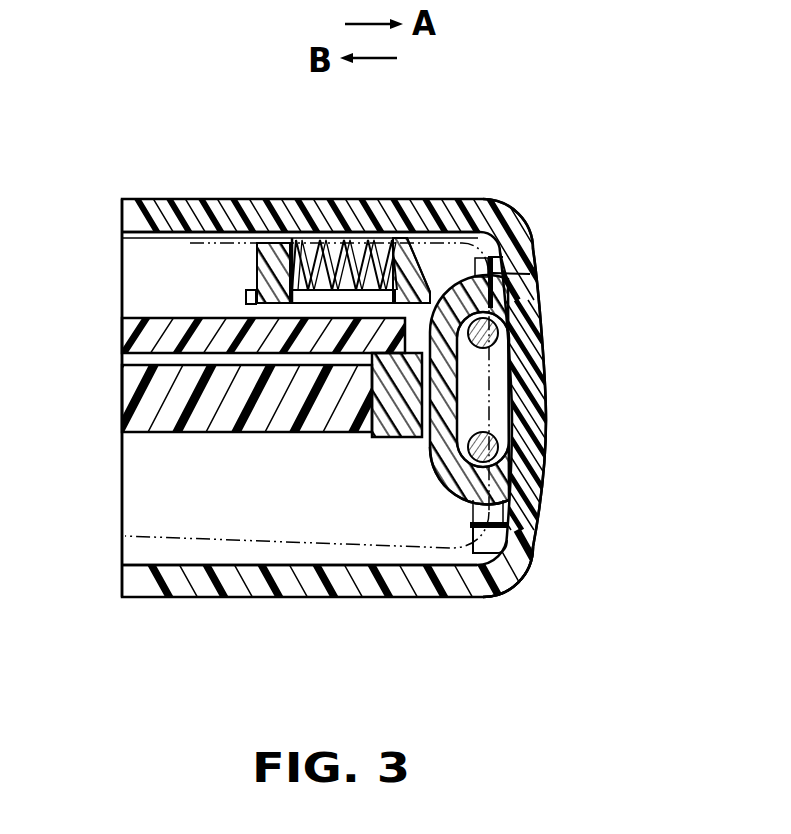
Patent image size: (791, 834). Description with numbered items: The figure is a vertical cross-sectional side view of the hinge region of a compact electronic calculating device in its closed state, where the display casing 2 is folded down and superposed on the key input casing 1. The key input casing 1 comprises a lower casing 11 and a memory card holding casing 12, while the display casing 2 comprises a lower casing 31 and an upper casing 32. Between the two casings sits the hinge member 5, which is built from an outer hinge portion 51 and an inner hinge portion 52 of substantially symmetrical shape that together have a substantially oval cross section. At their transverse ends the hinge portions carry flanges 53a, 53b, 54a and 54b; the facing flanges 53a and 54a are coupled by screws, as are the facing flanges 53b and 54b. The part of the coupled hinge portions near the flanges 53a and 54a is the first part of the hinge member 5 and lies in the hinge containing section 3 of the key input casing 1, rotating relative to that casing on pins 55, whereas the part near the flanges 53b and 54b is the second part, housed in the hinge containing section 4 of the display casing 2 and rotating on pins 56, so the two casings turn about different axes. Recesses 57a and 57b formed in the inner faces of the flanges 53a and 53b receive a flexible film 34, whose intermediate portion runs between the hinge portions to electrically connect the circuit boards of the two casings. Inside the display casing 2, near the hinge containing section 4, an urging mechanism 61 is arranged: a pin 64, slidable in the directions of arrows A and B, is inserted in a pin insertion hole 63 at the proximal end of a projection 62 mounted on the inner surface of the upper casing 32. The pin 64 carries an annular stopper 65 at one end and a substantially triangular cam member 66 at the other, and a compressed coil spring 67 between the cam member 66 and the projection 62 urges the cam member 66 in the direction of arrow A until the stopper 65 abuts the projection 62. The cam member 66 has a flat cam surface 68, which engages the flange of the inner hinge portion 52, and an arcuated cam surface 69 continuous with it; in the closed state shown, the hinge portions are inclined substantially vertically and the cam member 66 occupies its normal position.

The key input casing 1 is at (152, 605).
The display casing 2 is at (133, 190).
The hinge containing section 3 is at (523, 502).
The hinge containing section 4 is at (527, 292).
The hinge member 5 is at (556, 381).
The lower casing 11 is at (219, 597).
The memory card holding casing 12 is at (120, 405).
The lower casing 31 is at (198, 210).
The upper casing 32 is at (122, 330).
The flexible film 34 is at (303, 592).
The outer hinge portion 51 is at (410, 391).
The inner hinge portion 52 is at (432, 464).
The flange 53a is at (518, 553).
The flange 53b is at (505, 272).
The flange 54a is at (473, 560).
The flange 54b is at (490, 256).
The pins 55 is at (502, 450).
The pins 56 is at (503, 326).
The recess 57a is at (520, 572).
The recess 57b is at (503, 222).
The urging mechanism 61 is at (238, 268).
The projection 62 is at (256, 240).
The pin insertion hole 63 is at (290, 236).
The pin 64 is at (355, 290).
The annular stopper 65 is at (246, 298).
The cam member 66 is at (395, 240).
The compressed coil spring 67 is at (315, 238).
The flat cam surface 68 is at (428, 250).
The arcuated cam surface 69 is at (393, 392).